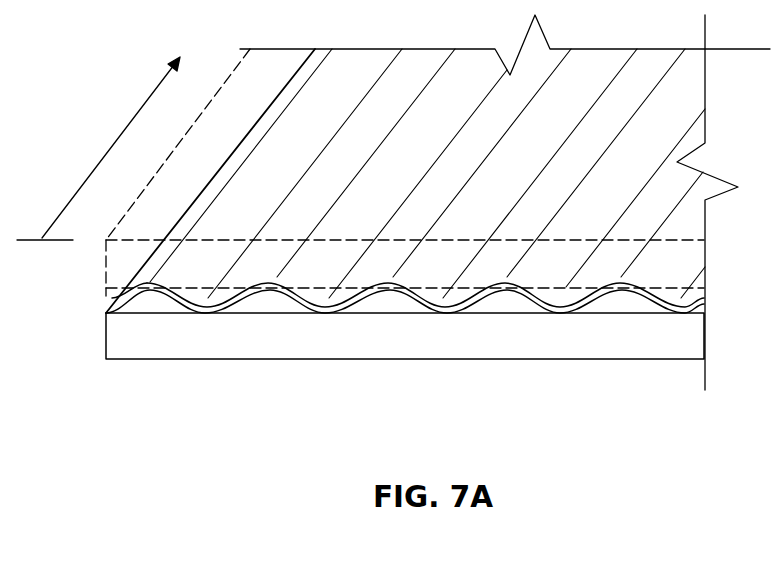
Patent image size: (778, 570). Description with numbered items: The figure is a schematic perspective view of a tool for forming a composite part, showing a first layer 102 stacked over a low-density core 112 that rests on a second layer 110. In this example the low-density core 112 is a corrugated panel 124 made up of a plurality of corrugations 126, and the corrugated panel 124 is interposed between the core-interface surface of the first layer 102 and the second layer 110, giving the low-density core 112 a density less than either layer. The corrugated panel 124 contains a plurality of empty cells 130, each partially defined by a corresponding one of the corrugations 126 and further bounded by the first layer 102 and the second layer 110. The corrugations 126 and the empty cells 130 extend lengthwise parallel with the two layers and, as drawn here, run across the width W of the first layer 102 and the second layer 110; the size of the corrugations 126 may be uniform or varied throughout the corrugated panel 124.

The first layer 102 is at (177, 147).
The second layer 110 is at (125, 345).
The low-density core 112 is at (104, 297).
The corrugated panel 124 is at (152, 270).
The corrugations 126 is at (210, 233).
The empty cells 130 is at (682, 283).
The width W is at (160, 80).